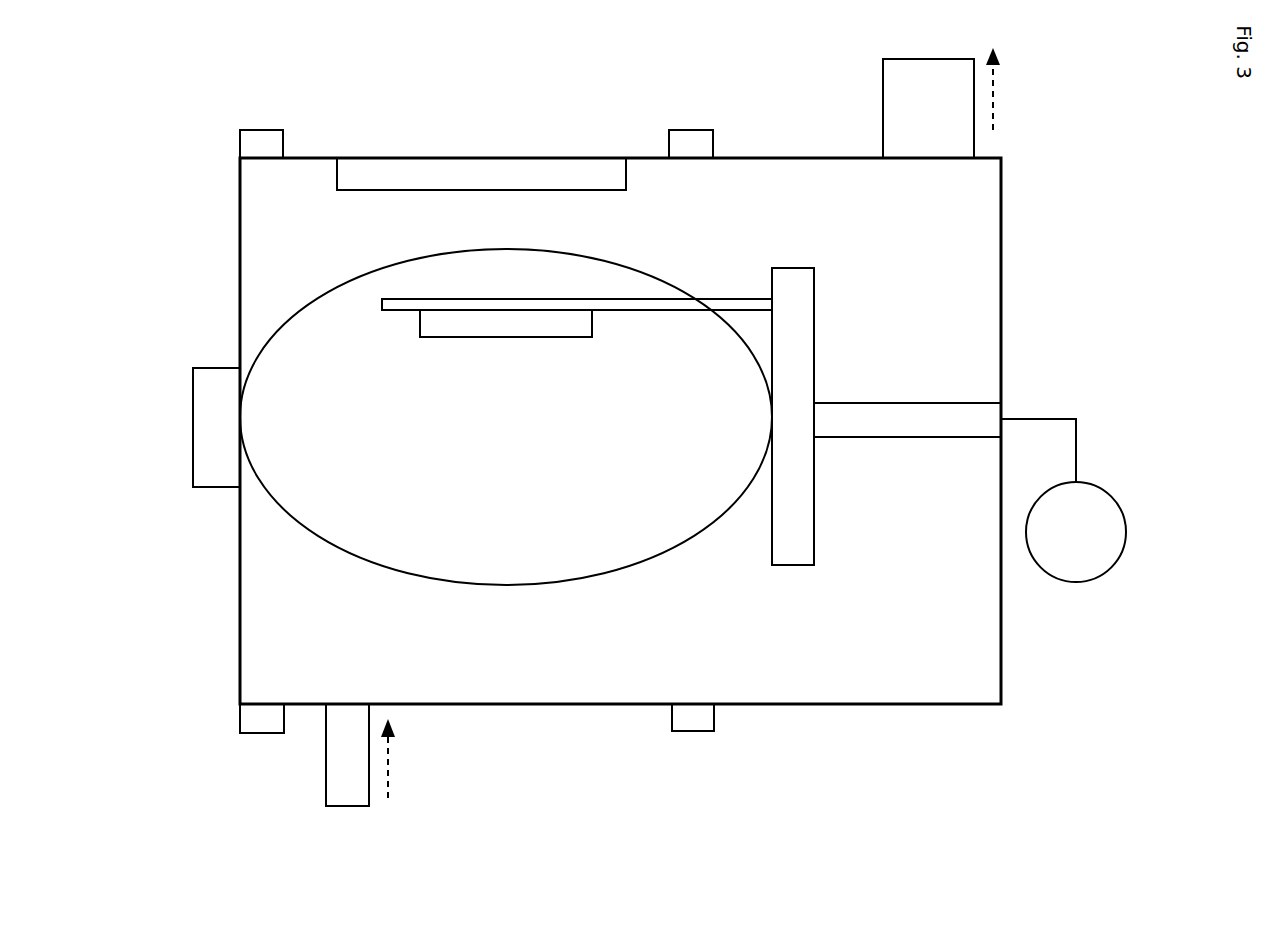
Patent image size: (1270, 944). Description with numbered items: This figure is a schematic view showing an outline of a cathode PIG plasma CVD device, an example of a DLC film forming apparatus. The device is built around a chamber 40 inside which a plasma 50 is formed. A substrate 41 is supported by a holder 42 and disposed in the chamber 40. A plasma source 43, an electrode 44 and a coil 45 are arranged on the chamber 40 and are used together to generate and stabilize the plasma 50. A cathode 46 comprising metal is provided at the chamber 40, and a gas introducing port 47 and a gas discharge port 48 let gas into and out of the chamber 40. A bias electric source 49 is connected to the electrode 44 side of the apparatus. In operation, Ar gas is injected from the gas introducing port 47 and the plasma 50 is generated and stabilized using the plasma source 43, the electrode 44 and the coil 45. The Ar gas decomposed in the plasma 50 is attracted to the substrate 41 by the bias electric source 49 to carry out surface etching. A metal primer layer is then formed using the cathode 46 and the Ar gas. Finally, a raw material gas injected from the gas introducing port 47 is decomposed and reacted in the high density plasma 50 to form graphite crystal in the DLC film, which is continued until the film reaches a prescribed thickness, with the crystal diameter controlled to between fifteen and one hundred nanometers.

The chamber 40 is at (1001, 248).
The substrate 41 is at (517, 322).
The holder 42 is at (624, 303).
The plasma source 43 is at (210, 478).
The electrode 44 is at (798, 525).
The coil 45 is at (690, 723).
The cathode 46 is at (469, 172).
The gas introducing port 47 is at (340, 761).
The gas discharge port 48 is at (895, 101).
The bias electric source 49 is at (1102, 510).
The plasma 50 is at (517, 567).